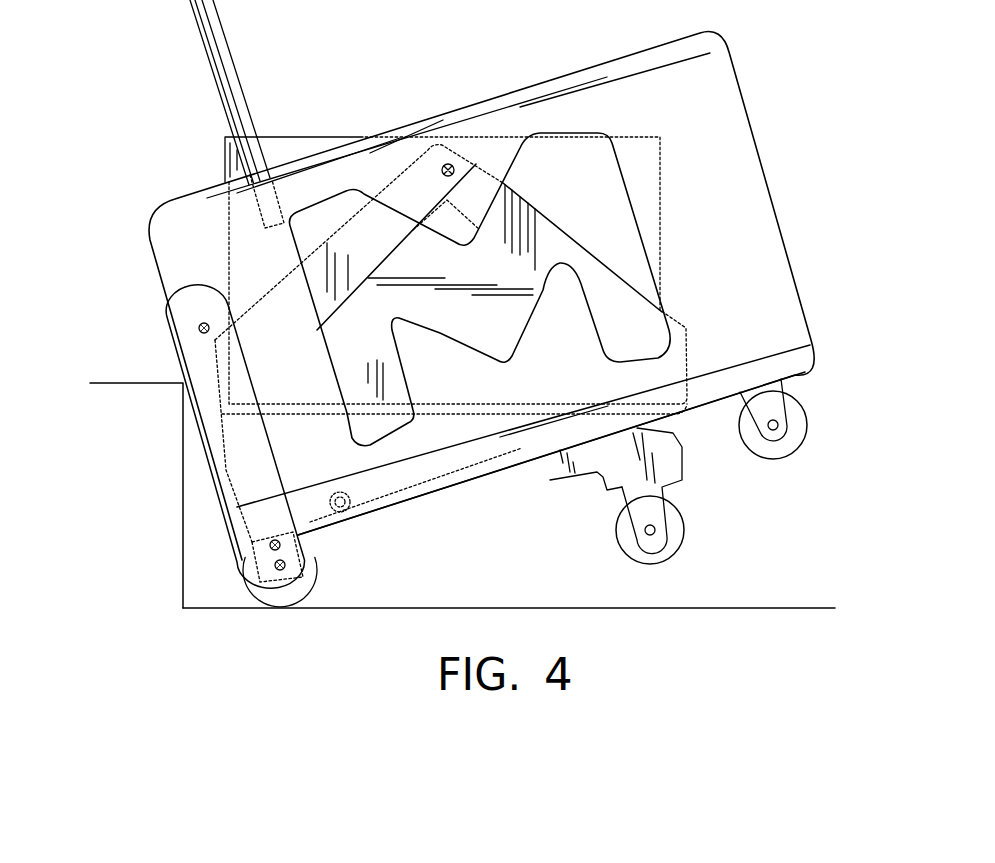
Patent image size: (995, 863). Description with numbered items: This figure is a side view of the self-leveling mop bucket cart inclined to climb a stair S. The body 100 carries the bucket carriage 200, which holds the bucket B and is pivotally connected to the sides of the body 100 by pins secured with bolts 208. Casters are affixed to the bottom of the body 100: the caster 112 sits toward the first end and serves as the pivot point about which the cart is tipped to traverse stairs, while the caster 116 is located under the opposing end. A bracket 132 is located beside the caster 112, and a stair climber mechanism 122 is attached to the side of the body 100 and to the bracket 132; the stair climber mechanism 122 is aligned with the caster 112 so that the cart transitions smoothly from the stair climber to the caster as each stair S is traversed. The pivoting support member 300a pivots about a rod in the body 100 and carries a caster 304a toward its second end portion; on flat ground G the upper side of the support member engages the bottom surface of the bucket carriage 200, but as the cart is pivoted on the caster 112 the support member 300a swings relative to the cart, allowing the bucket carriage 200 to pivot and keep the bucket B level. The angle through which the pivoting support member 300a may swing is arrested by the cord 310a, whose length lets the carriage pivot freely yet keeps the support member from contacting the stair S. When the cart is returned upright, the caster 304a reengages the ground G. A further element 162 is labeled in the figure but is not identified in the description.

The body 100 is at (767, 185).
The caster 112 is at (707, 0).
The bucket B is at (293, 137).
The bucket carriage 200 is at (686, 328).
The bolts 208 is at (446, 164).
The stair climber mechanism 122 is at (228, 533).
The bracket 132 is at (297, 563).
The front wheel 162 is at (308, 590).
The caster 116 is at (797, 409).
The cord 310a is at (688, 415).
The pivoting support member 300a is at (550, 480).
The caster 304a is at (683, 533).
The stair S is at (168, 528).
The ground G is at (323, 626).